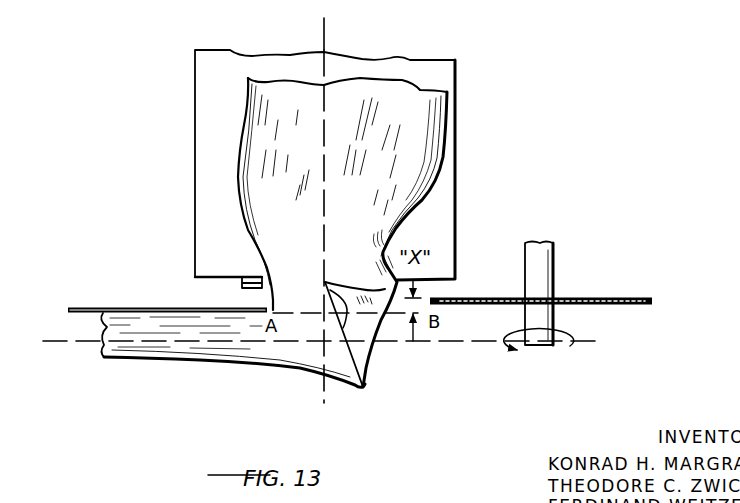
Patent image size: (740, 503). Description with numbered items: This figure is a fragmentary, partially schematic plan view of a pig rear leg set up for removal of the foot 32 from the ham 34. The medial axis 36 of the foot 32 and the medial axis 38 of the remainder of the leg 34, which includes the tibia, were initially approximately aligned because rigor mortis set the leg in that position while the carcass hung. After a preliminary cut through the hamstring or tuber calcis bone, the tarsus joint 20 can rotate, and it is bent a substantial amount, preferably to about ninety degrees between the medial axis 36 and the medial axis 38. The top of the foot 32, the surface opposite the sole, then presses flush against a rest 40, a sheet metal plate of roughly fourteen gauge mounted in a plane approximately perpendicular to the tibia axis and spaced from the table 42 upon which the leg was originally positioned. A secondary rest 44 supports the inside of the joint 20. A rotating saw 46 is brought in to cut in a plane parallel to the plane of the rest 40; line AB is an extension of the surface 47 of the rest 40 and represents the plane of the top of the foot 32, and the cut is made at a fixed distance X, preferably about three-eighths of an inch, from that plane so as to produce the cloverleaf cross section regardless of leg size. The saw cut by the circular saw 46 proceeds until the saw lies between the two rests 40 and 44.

The tarsus joint 20 is at (352, 325).
The foot 32 is at (283, 353).
The ham 34 is at (395, 178).
The medial axis of the foot 36 is at (57, 343).
The medial axis of the remainder of the leg 38 is at (324, 37).
The rest 40 is at (220, 313).
The table 42 is at (212, 148).
The secondary rest 44 is at (250, 280).
The rotating saw 46 is at (602, 298).
The surface of the rest 47 is at (80, 314).